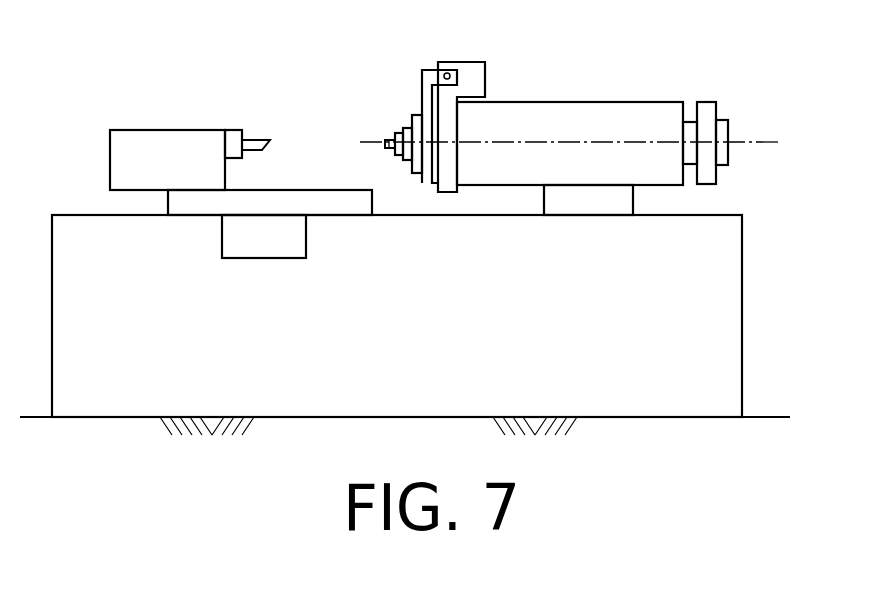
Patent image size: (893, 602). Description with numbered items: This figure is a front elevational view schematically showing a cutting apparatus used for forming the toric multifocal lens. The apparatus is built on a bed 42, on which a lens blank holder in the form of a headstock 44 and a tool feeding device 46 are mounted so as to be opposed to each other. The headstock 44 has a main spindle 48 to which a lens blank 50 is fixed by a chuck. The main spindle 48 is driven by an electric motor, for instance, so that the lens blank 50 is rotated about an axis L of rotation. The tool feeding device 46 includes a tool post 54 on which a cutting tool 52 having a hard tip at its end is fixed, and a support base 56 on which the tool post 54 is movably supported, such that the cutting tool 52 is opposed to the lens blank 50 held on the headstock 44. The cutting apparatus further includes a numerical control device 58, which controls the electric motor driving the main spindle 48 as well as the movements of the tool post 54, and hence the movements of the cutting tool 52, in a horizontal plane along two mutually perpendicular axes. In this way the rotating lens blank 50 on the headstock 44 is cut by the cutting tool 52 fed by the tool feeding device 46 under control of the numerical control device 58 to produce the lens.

The bed 42 is at (726, 313).
The headstock 44 is at (545, 114).
The tool feeding device 46 is at (176, 107).
The main spindle 48 is at (407, 130).
The lens blank 50 is at (388, 137).
The cutting tool 52 is at (253, 138).
The tool post 54 is at (143, 138).
The support base 56 is at (190, 202).
The numerical control device 58 is at (285, 245).
The axis of rotation L is at (766, 120).